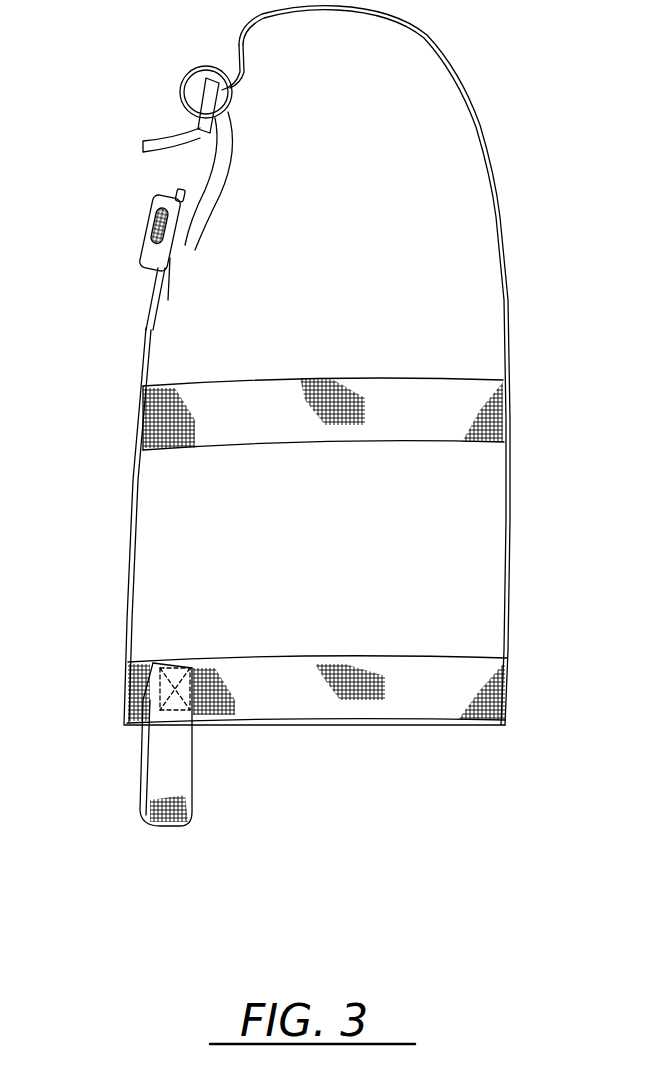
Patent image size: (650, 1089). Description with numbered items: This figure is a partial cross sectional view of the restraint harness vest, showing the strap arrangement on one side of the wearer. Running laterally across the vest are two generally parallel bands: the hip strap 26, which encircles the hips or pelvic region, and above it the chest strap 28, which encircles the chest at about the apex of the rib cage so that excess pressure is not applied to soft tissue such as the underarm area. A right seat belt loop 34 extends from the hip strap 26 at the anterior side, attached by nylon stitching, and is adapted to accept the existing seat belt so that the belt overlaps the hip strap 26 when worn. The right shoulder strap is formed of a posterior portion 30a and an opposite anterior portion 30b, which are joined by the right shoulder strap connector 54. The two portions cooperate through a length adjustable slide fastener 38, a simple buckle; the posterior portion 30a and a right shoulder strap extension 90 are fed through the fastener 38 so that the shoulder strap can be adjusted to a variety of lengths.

The hip strap 26 is at (353, 720).
The chest strap 28 is at (343, 442).
The posterior portion of right shoulder strap 30a is at (483, 119).
The anterior portion of right shoulder strap 30b is at (136, 362).
The right seat belt loop 34 is at (190, 800).
The length adjustable slide fastener 38 is at (218, 112).
The right shoulder strap connector 54 is at (137, 256).
The right shoulder strap extension 90 is at (143, 147).